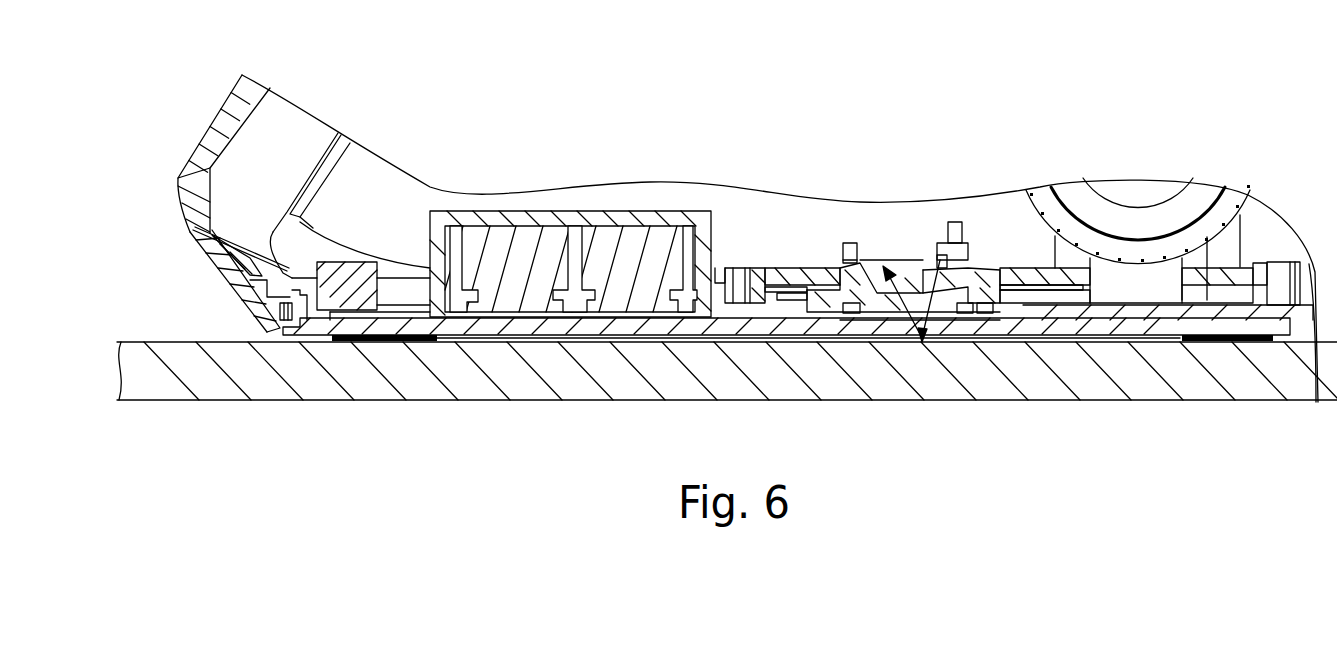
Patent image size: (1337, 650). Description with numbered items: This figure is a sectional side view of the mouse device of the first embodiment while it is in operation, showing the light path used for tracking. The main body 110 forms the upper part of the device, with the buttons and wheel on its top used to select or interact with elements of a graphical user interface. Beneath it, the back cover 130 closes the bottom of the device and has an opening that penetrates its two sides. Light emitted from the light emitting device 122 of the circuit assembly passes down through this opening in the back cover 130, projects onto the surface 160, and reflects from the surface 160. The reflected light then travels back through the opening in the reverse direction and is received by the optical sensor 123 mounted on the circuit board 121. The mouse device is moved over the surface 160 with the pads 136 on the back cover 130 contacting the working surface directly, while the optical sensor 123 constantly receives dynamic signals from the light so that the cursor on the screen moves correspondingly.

The main body 110 is at (194, 126).
The circuit board 121 is at (1057, 275).
The light emitting device 122 is at (940, 260).
The optical sensor 123 is at (867, 287).
The back cover 130 is at (235, 322).
The pads 136 is at (388, 342).
The surface 160 is at (142, 334).